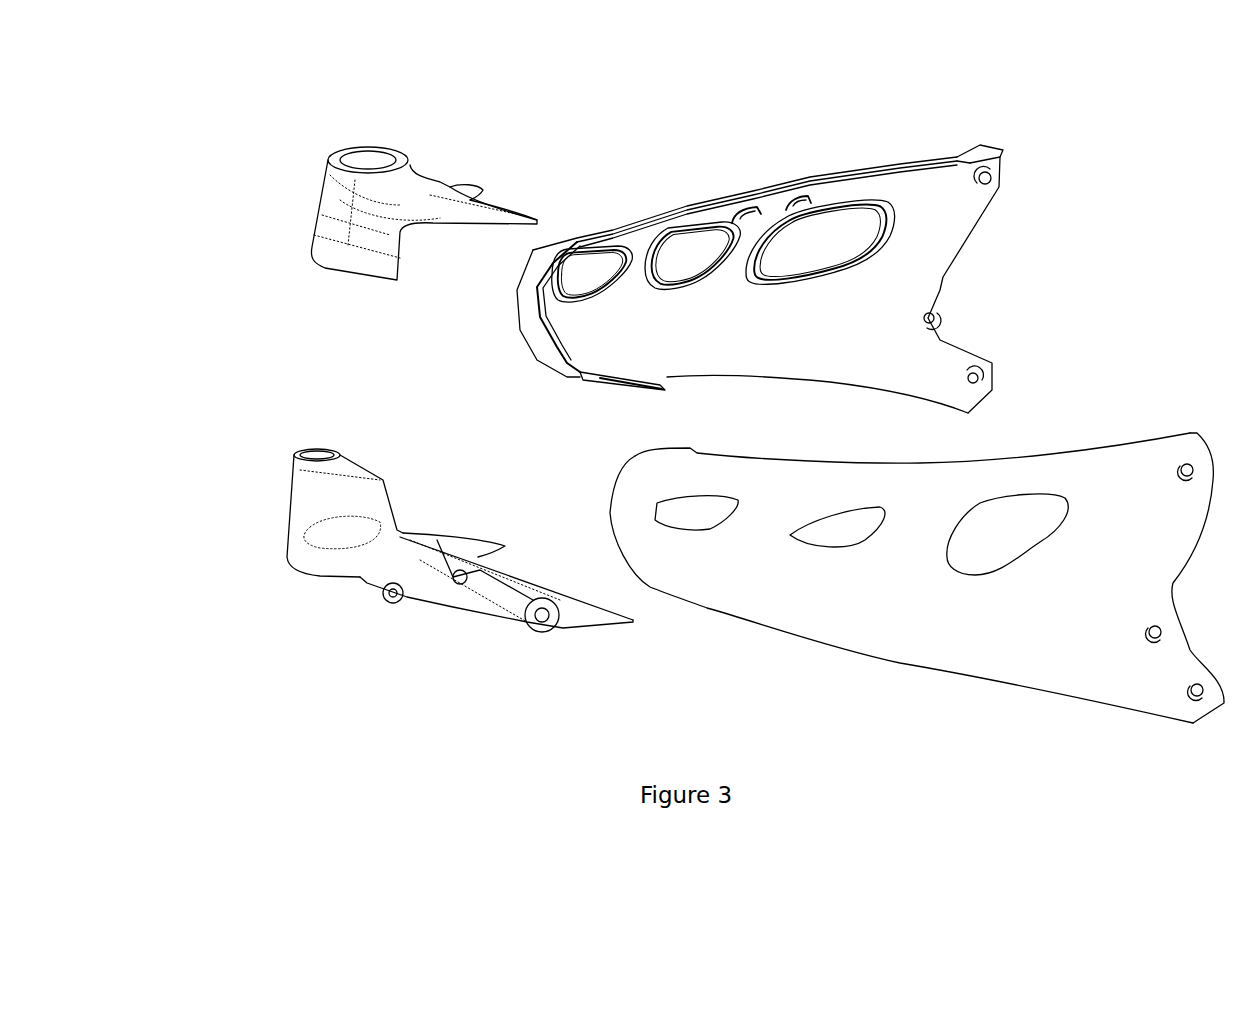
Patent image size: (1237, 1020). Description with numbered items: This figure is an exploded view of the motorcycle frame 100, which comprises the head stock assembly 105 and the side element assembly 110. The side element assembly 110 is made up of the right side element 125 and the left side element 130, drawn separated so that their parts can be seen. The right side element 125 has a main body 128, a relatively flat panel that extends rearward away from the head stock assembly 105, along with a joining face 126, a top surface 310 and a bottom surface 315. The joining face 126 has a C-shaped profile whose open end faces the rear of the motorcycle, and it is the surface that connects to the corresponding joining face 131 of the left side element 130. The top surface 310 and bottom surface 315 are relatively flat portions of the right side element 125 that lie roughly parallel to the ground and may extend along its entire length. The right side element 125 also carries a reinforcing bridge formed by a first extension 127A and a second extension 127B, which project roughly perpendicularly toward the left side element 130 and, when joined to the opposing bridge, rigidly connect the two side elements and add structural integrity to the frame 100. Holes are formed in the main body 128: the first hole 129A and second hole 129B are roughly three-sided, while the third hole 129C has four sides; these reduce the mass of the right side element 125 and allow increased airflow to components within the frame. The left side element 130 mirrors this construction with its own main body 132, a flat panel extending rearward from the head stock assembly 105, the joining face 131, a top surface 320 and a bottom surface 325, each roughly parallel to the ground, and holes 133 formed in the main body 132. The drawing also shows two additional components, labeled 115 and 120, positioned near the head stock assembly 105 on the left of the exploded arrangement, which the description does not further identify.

The motorcycle frame 100 is at (327, 705).
The head stock assembly 105 is at (262, 163).
The side element assembly 110 is at (1164, 163).
The bracket body 115 is at (383, 260).
The lower bracket 120 is at (305, 501).
The right side element 125 is at (807, 161).
The joining face 126 is at (574, 244).
The first extension 127A is at (737, 218).
The second extension 127B is at (806, 208).
The main body 128 is at (928, 245).
The first hole 129A is at (625, 291).
The second hole 129B is at (720, 290).
The third hole 129C is at (845, 272).
The left side element 130 is at (945, 691).
The joining face 131 is at (623, 470).
The main body 132 is at (853, 605).
The holes 133 is at (1005, 573).
The top surface 310 is at (598, 232).
The bottom surface 315 is at (614, 391).
The top surface 320 is at (681, 465).
The bottom surface 325 is at (707, 607).